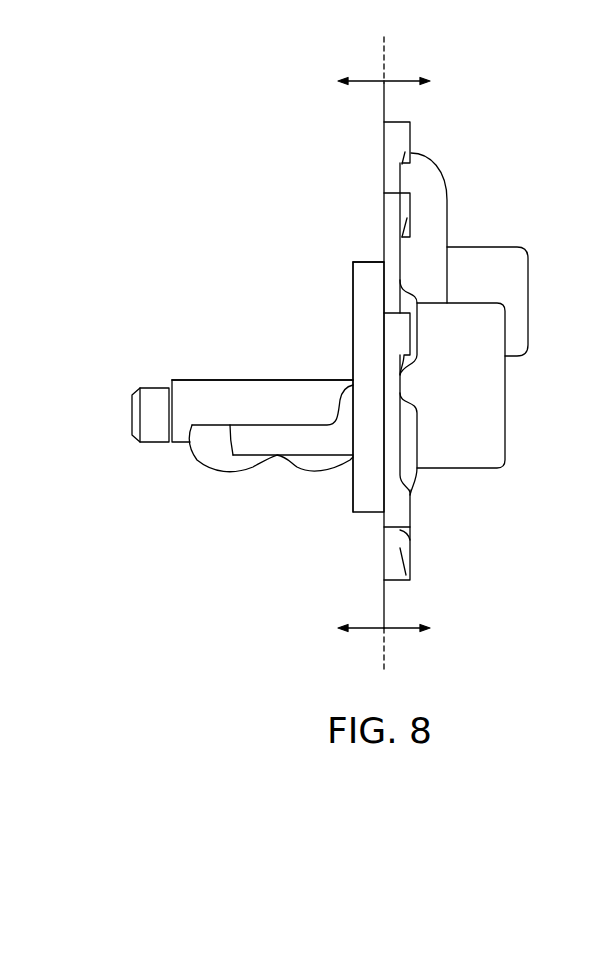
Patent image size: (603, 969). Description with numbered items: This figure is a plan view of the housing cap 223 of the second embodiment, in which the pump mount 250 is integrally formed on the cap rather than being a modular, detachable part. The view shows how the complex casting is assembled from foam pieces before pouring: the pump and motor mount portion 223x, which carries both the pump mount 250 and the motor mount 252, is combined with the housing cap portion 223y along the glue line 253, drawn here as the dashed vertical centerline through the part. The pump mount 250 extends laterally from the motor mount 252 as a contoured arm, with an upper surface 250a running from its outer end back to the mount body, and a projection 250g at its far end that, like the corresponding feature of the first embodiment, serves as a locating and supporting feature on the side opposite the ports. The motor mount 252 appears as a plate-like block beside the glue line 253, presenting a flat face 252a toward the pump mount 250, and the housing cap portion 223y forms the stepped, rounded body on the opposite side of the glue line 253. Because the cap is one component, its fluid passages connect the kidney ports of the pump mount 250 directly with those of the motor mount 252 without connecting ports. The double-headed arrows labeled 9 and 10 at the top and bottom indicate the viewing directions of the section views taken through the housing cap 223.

The housing cap 223 is at (195, 193).
The pump and motor mount portion 223x is at (362, 262).
The housing cap portion 223y is at (484, 247).
The pump mount 250 is at (201, 347).
The link arm upper surface 250a is at (313, 380).
The projection 250g is at (152, 443).
The motor mount 252 is at (316, 280).
The mounting plate face 252a is at (353, 327).
The glue line 253 is at (386, 52).
The section line 9-9 view direction 9 is at (351, 356).
The section line 10-10 view direction 10 is at (425, 356).